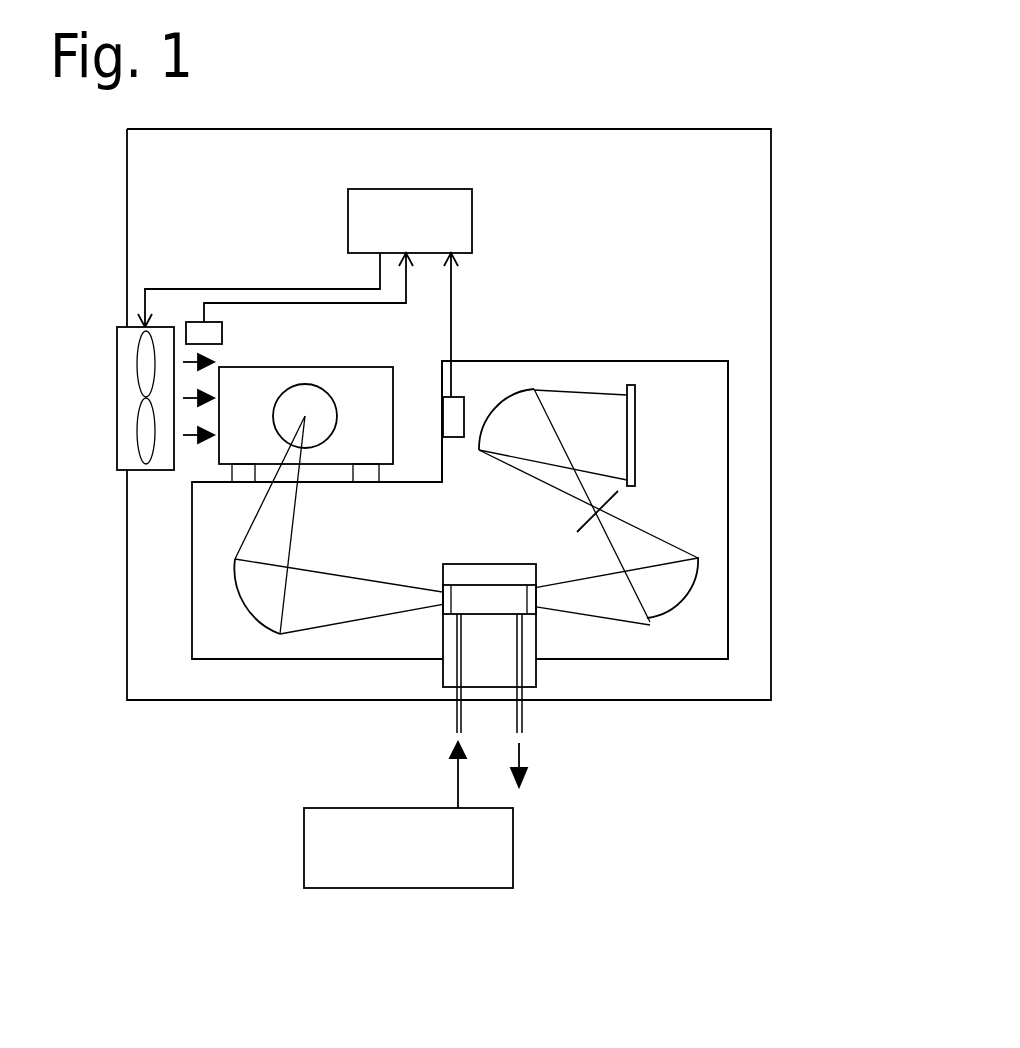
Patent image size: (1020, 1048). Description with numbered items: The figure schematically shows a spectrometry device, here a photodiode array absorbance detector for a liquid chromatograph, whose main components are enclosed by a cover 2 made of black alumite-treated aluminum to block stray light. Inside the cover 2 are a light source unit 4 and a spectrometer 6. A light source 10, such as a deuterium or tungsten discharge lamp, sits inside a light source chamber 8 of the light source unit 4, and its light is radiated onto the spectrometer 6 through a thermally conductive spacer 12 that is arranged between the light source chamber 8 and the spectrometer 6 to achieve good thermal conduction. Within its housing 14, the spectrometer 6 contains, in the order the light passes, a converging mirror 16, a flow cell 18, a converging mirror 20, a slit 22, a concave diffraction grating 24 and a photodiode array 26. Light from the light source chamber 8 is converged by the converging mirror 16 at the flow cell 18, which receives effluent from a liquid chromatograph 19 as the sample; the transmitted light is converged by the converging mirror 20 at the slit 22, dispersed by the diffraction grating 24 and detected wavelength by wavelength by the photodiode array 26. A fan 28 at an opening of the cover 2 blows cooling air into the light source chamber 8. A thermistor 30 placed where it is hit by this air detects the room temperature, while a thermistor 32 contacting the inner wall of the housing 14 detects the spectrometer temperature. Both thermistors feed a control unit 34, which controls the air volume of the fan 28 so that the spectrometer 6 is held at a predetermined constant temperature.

The cover 2 is at (771, 190).
The light source unit 4 is at (265, 408).
The spectrometer 6 is at (689, 350).
The light source chamber 8 is at (363, 365).
The light source 10 is at (313, 384).
The spacer 12 is at (232, 472).
The housing 14 is at (577, 360).
The converging mirror 16 is at (245, 603).
The flow cell 18 is at (468, 583).
The liquid chromatograph 19 is at (516, 848).
The converging mirror 20 is at (678, 600).
The slit 22 is at (608, 503).
The concave diffraction grating 24 is at (497, 415).
The photodiode array 26 is at (637, 427).
The fan 28 is at (116, 361).
The thermistor 30 is at (198, 321).
The thermistor 32 is at (457, 440).
The control unit 34 is at (422, 188).